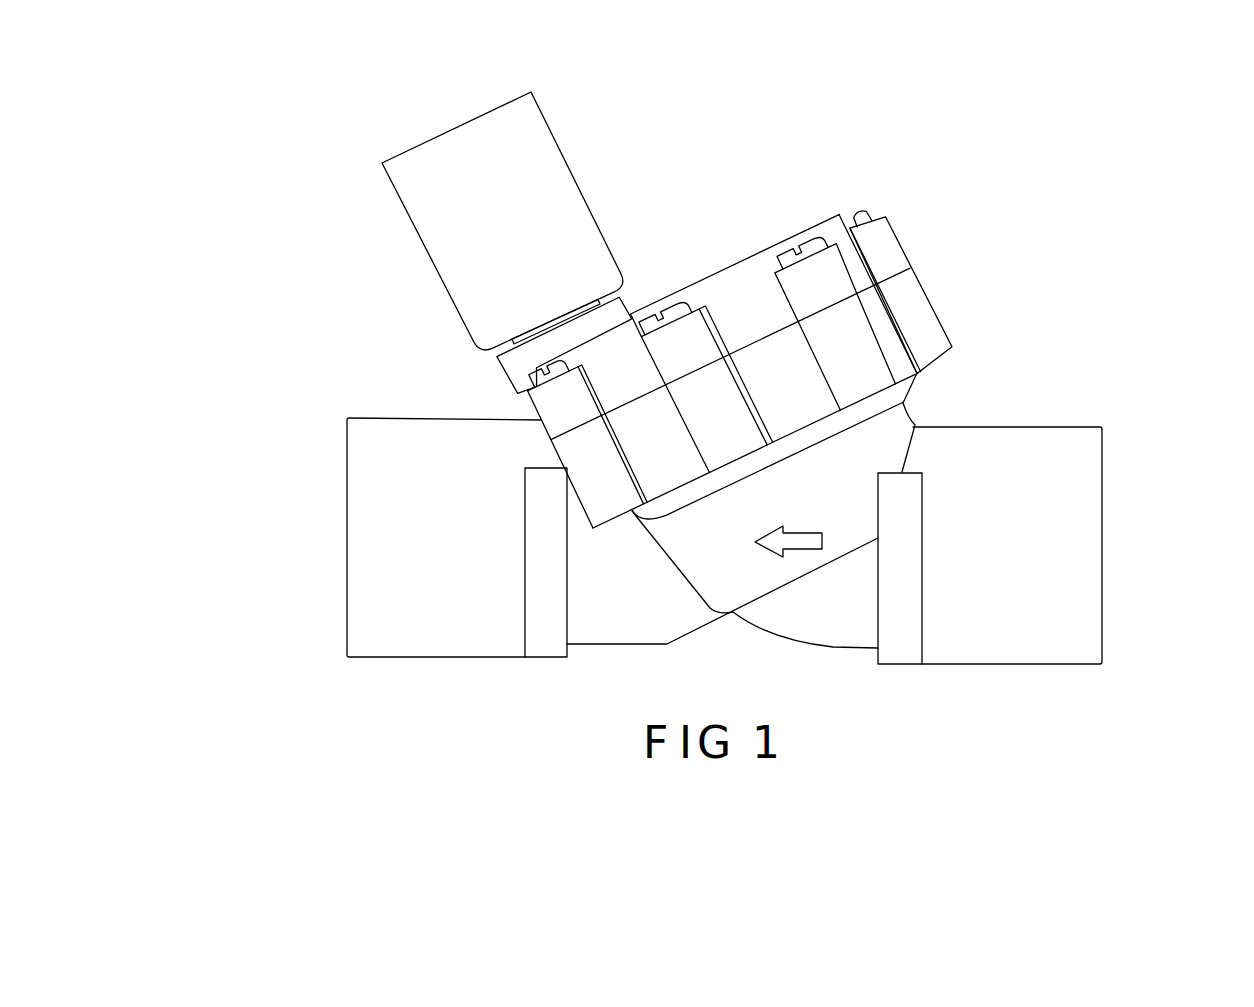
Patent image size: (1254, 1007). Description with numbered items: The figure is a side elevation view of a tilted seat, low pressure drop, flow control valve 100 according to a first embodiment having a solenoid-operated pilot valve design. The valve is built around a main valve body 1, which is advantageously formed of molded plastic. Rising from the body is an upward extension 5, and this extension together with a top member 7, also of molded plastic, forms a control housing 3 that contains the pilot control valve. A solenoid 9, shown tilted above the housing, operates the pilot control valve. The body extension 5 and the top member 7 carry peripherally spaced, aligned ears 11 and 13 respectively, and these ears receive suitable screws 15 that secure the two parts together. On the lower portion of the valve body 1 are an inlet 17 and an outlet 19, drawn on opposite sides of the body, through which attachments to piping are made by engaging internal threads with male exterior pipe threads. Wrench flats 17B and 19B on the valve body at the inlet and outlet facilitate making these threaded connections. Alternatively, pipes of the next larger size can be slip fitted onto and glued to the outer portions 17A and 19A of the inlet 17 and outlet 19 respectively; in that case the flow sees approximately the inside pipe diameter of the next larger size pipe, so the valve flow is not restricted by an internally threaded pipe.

The flow control valve 100 is at (998, 83).
The main valve body 1 is at (755, 628).
The control housing 3 is at (810, 314).
The upward extension 5 is at (945, 255).
The top member 7 is at (740, 276).
The solenoid 9 is at (588, 190).
The ears 11 is at (751, 398).
The ears 13 is at (817, 283).
The screws 15 is at (802, 252).
The inlet 17 is at (1060, 621).
The outer portion of inlet 17A is at (1015, 665).
The wrench flats 17B is at (902, 600).
The outlet 19 is at (385, 615).
The outer portion of outlet 19A is at (430, 657).
The wrench flats 19B is at (552, 603).